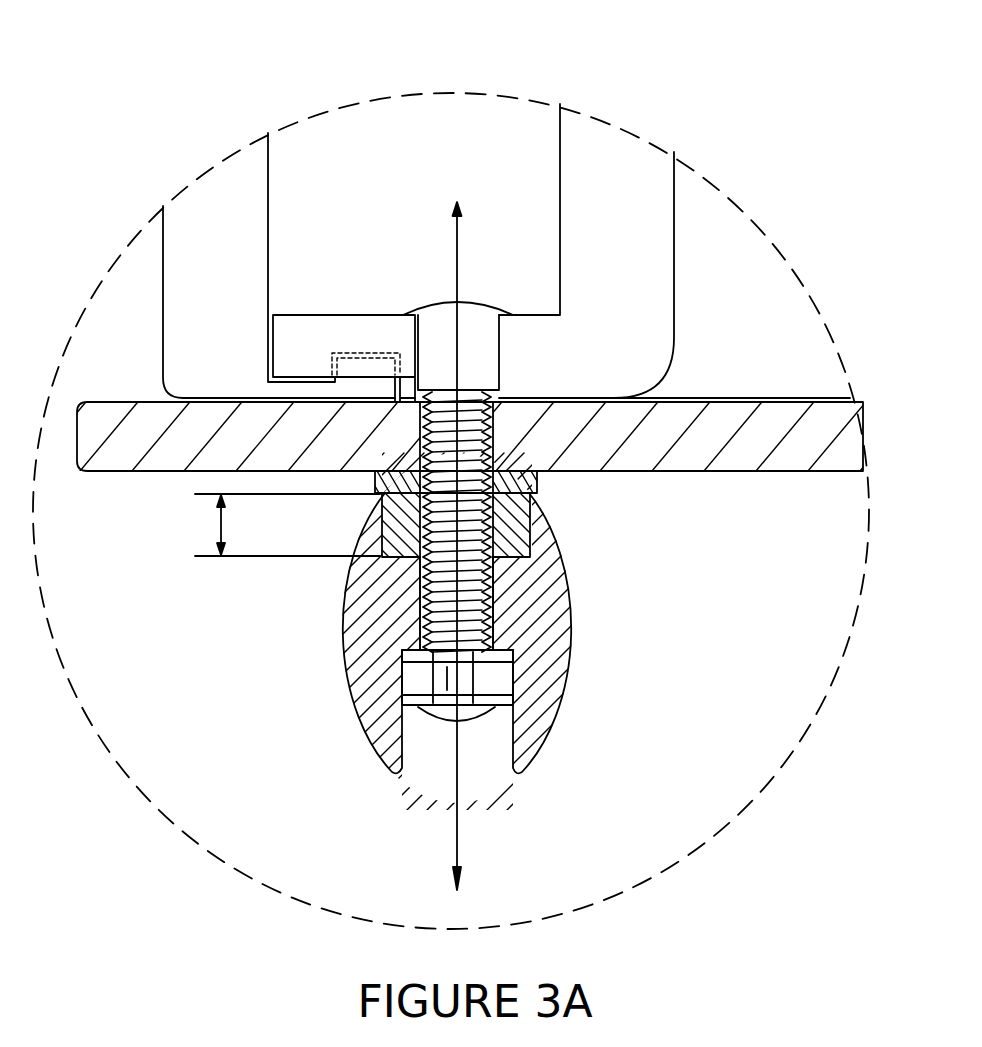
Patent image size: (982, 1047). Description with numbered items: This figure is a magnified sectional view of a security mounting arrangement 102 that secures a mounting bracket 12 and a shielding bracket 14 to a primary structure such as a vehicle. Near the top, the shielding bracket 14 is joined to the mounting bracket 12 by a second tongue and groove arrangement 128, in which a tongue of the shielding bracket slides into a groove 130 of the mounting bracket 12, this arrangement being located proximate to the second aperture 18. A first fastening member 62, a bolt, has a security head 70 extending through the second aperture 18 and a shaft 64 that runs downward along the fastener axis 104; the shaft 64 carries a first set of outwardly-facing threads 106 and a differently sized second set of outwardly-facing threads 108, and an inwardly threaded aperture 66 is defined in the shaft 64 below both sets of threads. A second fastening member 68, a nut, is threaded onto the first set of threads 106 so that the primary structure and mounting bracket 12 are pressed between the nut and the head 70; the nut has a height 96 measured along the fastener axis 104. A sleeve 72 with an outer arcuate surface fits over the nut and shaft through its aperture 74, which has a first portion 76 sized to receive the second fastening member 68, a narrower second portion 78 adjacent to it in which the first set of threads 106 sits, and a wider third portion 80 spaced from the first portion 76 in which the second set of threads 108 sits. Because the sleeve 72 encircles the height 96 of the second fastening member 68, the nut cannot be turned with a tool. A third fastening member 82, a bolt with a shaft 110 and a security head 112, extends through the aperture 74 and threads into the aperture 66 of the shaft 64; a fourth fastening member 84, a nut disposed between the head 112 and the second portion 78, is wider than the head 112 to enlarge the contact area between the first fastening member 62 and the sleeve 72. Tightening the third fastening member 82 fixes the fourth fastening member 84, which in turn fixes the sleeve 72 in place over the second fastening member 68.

The mounting bracket 12 is at (630, 295).
The shielding bracket 14 is at (218, 240).
The second aperture 18 is at (433, 305).
The first fastening member 62 is at (452, 177).
The shaft 64 is at (420, 560).
The aperture 66 is at (442, 632).
The second fastening member 68 is at (513, 530).
The security head 70 is at (418, 352).
The sleeve 72 is at (357, 576).
The aperture 74 is at (640, 732).
The first portion 76 is at (522, 553).
The second portion 78 is at (493, 610).
The third portion 80 is at (514, 735).
The third fastening member 82 is at (467, 753).
The fourth fastening member 84 is at (408, 692).
The height 96 is at (220, 525).
The security mounting arrangement 102 is at (590, 153).
The fastener axis 104 is at (460, 348).
The first set of outwardly-facing threads 106 is at (500, 496).
The second set of outwardly-facing threads 108 is at (480, 673).
The shaft 110 is at (450, 678).
The security head 112 is at (450, 712).
The second tongue and groove arrangement 128 is at (265, 347).
The groove 130 is at (298, 355).